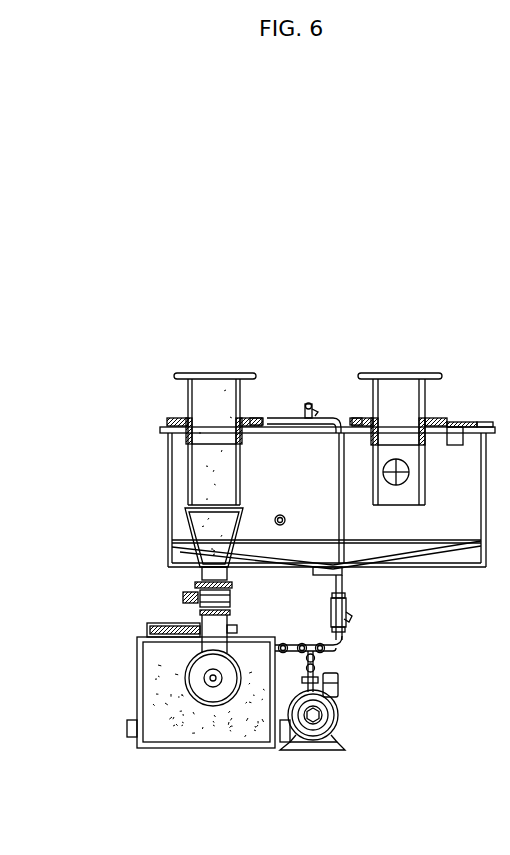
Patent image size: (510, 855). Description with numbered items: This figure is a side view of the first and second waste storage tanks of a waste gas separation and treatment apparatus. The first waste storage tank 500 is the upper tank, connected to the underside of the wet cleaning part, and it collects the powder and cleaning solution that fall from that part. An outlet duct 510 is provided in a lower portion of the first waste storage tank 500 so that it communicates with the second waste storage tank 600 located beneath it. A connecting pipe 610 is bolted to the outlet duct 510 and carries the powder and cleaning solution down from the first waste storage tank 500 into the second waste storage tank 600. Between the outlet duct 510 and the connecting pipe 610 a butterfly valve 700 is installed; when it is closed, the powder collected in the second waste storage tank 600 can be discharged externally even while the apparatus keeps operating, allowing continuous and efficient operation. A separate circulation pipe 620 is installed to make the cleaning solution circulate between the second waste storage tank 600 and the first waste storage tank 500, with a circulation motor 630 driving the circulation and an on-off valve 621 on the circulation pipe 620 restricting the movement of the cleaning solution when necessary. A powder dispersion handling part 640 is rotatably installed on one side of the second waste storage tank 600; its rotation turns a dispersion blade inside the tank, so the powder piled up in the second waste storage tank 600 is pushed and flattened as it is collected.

The first waste storage tank 500 is at (140, 433).
The outlet duct 510 is at (185, 568).
The butterfly valve 700 is at (183, 598).
The connecting pipe 610 is at (197, 612).
The powder dispersion handling part 640 is at (213, 679).
The circulation pipe 620 is at (342, 590).
The on-off valve 621 is at (357, 644).
The circulation motor 630 is at (340, 713).
The second waste storage tank 600 is at (292, 768).